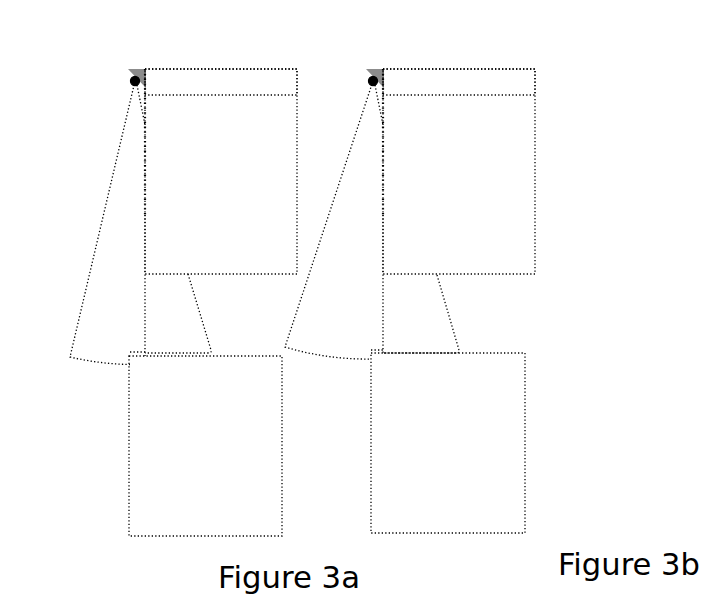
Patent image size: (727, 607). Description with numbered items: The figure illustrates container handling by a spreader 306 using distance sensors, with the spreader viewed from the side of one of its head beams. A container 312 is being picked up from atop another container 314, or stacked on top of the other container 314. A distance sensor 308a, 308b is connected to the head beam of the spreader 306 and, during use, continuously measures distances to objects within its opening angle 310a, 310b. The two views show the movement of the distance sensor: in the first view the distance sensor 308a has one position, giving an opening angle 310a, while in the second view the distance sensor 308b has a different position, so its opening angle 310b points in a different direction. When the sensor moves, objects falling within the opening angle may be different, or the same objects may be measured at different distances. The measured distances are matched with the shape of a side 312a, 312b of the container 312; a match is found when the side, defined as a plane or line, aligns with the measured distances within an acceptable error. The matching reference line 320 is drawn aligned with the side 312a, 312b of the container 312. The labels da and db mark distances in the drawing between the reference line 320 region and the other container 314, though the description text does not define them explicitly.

In FIG. 3A, the spreader 306 is at (258, 68).
In FIG. 3B, the spreader 306 is at (483, 70).
In FIG. 3A, the distance sensor 308a is at (133, 72).
In FIG. 3B, the distance sensor 308b is at (375, 70).
In FIG. 3A, the opening angle 310a is at (76, 326).
In FIG. 3B, the opening angle 310b is at (337, 360).
In FIG. 3A, the container 312 is at (221, 171).
In FIG. 3B, the container 312 is at (459, 171).
In FIG. 3A, the side of the container 312a is at (145, 185).
In FIG. 3B, the side of the container 312b is at (383, 190).
In FIG. 3A, the other container 314 is at (205, 446).
In FIG. 3B, the other container 314 is at (448, 443).
In FIG. 3A, the reference line 320 is at (145, 285).
In FIG. 3B, the reference line 320 is at (383, 288).
In FIG. 3A, the distance a da is at (133, 351).
In FIG. 3B, the distance b db is at (375, 350).